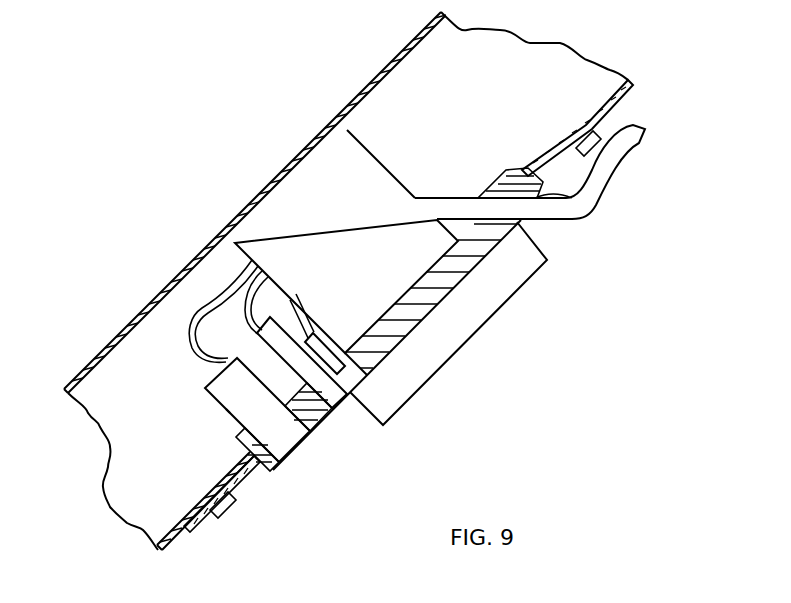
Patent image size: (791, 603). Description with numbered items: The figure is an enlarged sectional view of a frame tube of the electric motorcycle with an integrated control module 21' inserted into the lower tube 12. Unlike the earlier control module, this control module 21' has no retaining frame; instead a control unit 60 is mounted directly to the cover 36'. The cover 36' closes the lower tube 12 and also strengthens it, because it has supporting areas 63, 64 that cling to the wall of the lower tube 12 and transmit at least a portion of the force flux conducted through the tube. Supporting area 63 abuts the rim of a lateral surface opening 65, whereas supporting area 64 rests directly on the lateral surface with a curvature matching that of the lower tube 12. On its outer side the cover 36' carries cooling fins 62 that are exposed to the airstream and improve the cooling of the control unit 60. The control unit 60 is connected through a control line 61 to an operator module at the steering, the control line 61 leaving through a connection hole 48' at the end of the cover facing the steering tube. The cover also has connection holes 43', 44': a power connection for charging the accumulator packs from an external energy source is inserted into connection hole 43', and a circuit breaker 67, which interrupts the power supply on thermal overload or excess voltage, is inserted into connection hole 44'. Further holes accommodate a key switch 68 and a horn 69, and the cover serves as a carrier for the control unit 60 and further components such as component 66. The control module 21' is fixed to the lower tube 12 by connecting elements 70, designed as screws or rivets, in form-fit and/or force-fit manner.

The lower tube 12 is at (361, 93).
The control unit 60 is at (333, 248).
The circuit breaker 67 is at (215, 305).
The horn 69 is at (207, 367).
The further component 66 is at (225, 399).
The key switch 68 is at (240, 435).
The supporting area 63 is at (240, 464).
The supporting area 64 is at (198, 530).
The connecting element 70 is at (582, 141).
The connection hole 43' is at (280, 469).
The connection hole 44' is at (317, 433).
The cover 36' is at (428, 342).
The cooling fin 62 is at (461, 358).
The control module 21' is at (568, 242).
The connection hole 48' is at (531, 172).
The control line 61 is at (630, 127).
The lateral surface opening 65 is at (525, 170).